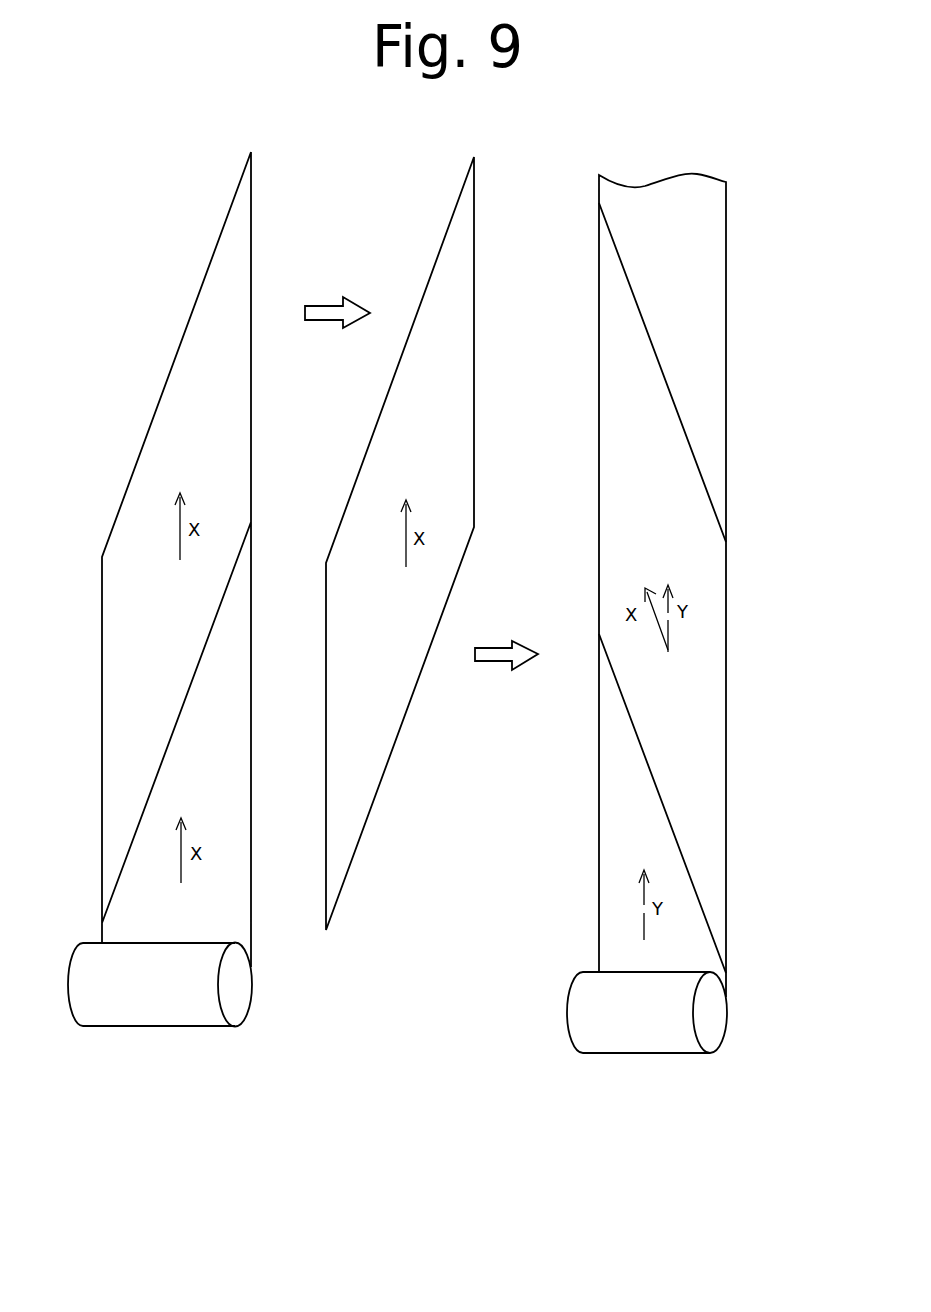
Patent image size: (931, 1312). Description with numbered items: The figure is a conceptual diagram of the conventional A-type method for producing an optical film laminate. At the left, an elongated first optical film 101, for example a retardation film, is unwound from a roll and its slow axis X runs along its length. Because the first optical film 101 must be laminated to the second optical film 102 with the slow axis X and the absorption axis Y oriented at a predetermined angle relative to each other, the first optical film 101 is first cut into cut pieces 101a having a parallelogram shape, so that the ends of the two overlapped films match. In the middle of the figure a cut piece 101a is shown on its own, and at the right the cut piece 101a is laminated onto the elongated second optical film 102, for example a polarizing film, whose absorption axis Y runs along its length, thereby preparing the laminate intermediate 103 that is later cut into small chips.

The first optical film 101 is at (168, 1005).
The cut piece 101a is at (203, 387).
The second optical film 102 is at (634, 1020).
The laminate intermediate 103 is at (732, 634).